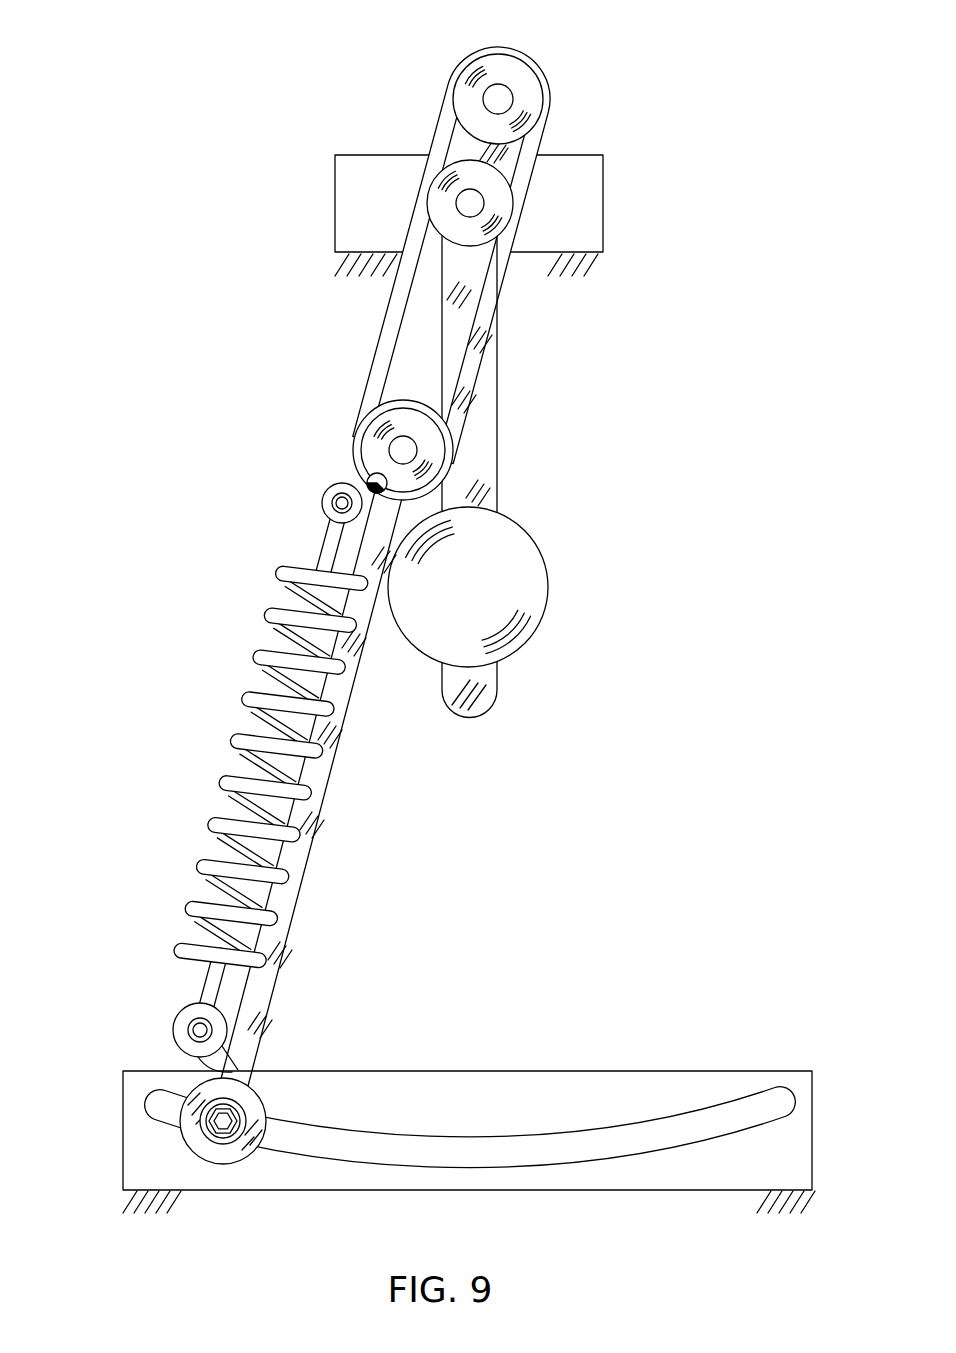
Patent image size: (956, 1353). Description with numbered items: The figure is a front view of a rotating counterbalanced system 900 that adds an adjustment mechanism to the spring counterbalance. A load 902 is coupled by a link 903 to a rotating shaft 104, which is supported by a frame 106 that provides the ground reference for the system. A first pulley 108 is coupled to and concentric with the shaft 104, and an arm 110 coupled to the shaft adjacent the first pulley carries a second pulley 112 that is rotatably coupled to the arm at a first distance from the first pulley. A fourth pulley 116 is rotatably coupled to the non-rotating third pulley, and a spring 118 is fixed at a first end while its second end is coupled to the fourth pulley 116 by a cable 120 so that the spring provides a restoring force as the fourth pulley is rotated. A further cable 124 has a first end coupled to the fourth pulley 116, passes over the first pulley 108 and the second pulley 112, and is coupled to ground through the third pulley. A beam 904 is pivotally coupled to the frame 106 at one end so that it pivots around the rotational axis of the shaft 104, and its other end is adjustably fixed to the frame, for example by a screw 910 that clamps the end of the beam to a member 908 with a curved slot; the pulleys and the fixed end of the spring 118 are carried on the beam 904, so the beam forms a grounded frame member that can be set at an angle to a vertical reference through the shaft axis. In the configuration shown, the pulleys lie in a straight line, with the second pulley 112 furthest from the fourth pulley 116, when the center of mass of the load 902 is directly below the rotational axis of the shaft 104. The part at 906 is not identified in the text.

The rotating counterbalanced system 900 is at (231, 117).
The rotating shaft 104 is at (484, 202).
The frame 106 is at (335, 255).
The first pulley 108 is at (432, 178).
The arm 110 is at (455, 150).
The second pulley 112 is at (540, 68).
The fourth pulley 116 is at (360, 443).
The spring 118 is at (288, 563).
The cable 120 is at (368, 477).
The cable 124 is at (503, 283).
The load 902 is at (540, 546).
The link 903 is at (497, 445).
The beam 904 is at (323, 813).
The spring mount 906 is at (175, 1023).
The member with a curved slot 908 is at (123, 1086).
The screw 910 is at (250, 1113).